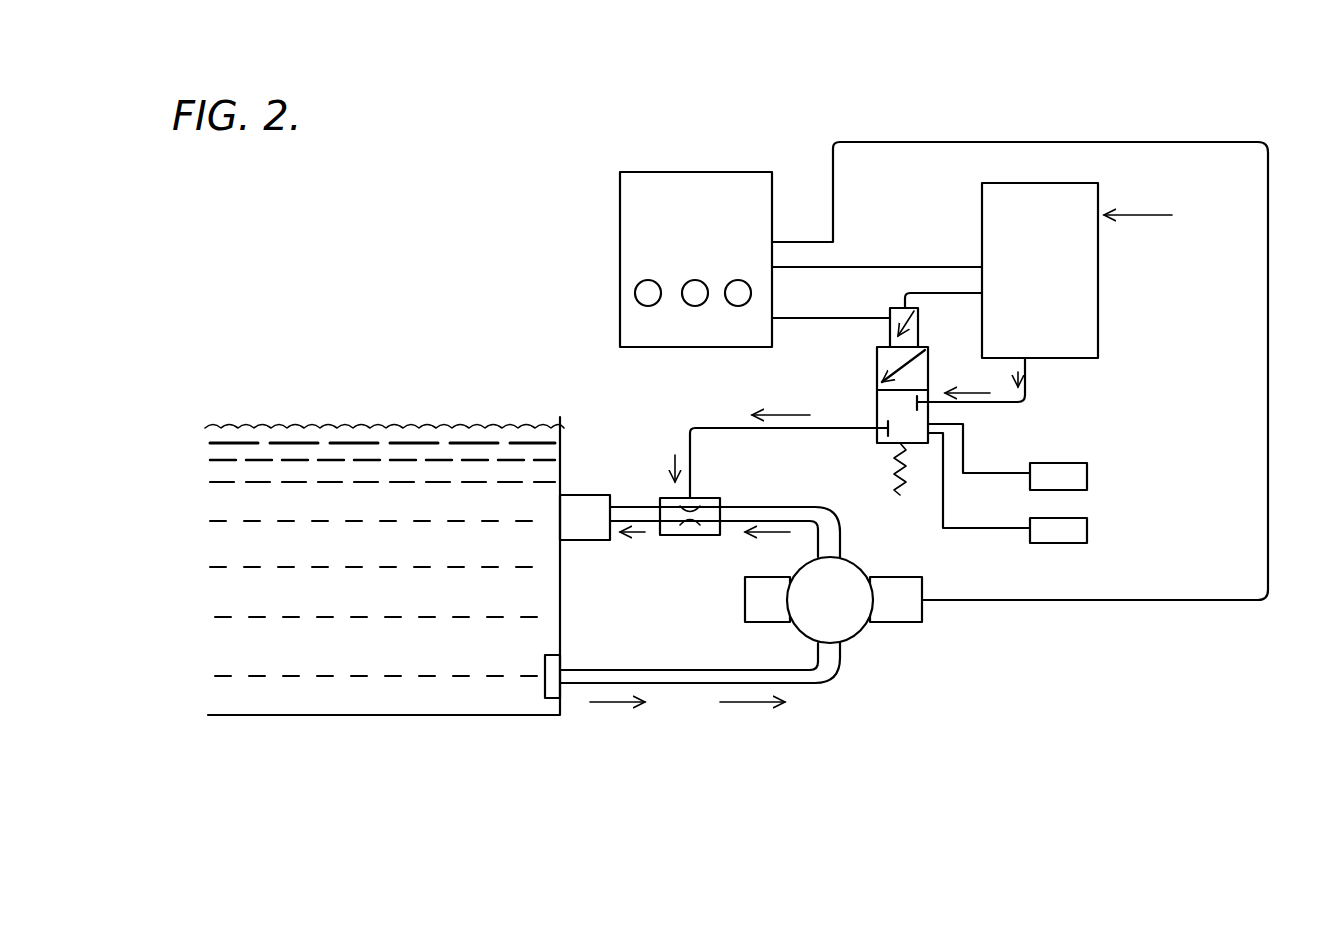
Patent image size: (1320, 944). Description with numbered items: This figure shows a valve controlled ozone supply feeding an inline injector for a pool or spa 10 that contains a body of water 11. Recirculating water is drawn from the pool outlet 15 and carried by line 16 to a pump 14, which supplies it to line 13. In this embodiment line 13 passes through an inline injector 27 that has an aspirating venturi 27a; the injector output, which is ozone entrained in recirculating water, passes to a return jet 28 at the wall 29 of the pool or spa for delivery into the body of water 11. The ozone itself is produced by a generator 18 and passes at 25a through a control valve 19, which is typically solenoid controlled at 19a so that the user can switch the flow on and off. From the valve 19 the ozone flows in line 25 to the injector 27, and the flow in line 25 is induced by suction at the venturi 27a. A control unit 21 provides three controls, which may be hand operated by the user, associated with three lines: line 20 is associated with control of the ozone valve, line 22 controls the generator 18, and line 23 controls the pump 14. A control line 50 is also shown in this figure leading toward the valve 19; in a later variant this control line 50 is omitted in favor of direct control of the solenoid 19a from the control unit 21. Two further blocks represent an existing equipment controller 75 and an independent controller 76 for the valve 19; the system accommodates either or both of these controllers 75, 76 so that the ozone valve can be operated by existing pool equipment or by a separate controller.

The pool or spa 10 is at (285, 722).
The body of water 11 is at (305, 652).
The line 13 is at (841, 535).
The pump 14 is at (858, 625).
The pool outlet 15 is at (545, 683).
The line 16 is at (700, 677).
The generator 18 is at (1100, 298).
The control valve 19 is at (873, 396).
The solenoid control 19a is at (917, 332).
The line 20 is at (836, 317).
The control unit 21 is at (645, 166).
The line 22 is at (862, 266).
The line 23 is at (1170, 600).
The line 25 is at (758, 433).
The ozone flow passage 25a is at (1000, 404).
The inline injector 27 is at (688, 541).
The aspirating venturi 27a is at (688, 512).
The return jet 28 is at (560, 516).
The wall 29 is at (560, 592).
The control line 50 is at (933, 292).
The existing equipment controller 75 is at (1087, 476).
The independent controller 76 is at (1087, 530).